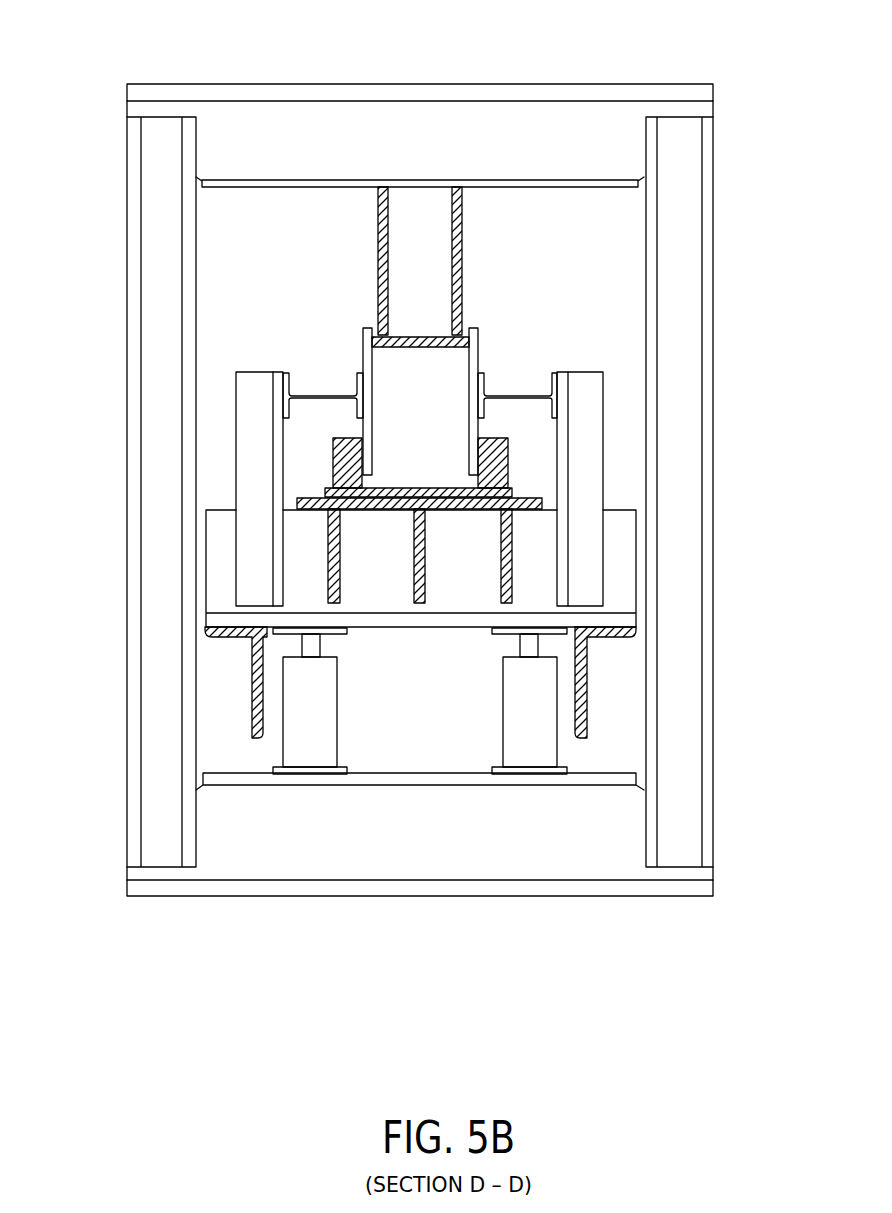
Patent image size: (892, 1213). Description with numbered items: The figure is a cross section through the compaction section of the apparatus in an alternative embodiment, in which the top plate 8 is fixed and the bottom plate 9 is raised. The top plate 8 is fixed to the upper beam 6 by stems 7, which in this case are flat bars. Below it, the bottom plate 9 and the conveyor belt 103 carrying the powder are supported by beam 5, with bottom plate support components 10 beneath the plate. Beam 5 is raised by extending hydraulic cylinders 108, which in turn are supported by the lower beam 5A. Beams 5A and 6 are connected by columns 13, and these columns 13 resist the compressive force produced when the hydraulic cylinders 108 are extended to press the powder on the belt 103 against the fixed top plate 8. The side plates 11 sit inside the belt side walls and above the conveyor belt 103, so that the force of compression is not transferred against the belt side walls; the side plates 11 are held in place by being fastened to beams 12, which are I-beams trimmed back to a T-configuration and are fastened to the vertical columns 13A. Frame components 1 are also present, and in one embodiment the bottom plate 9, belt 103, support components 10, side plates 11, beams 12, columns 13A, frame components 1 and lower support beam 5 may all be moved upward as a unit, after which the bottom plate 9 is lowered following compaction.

The frame component 1 is at (250, 697).
The beam 5 is at (457, 627).
The beam 5A is at (442, 896).
The beam 6 is at (467, 84).
The stem 7 is at (378, 263).
The top plate 8 is at (402, 333).
The bottom plate 9 is at (477, 512).
The bottom plate support component 10 is at (415, 538).
The side plate 11 is at (466, 410).
The beam 12 is at (333, 390).
The column 13 is at (128, 470).
The vertical column 13A is at (258, 372).
The conveyor belt 103 is at (380, 485).
The hydraulic cylinder 108 is at (337, 698).